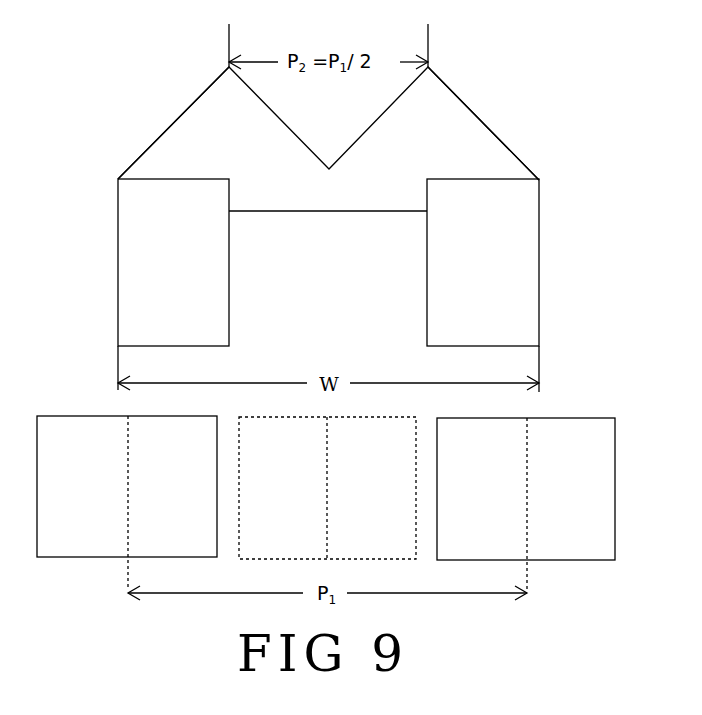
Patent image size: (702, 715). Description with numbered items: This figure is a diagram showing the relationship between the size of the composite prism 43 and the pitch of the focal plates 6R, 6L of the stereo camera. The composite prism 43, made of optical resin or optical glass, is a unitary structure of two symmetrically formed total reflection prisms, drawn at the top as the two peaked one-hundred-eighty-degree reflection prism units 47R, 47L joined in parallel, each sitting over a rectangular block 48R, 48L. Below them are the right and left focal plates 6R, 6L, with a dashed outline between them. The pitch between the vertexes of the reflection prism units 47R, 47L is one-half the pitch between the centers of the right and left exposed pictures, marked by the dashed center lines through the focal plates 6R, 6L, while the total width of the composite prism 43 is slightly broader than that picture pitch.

The composite prism 43 is at (170, 117).
The left 180-degree reflection prism unit 47L is at (140, 155).
The right 180-degree reflection prism unit 47R is at (506, 145).
The left light receiving element 48L is at (128, 270).
The right light receiving element 48R is at (537, 283).
The left focal plate 6L is at (61, 420).
The right focal plate 6R is at (583, 420).